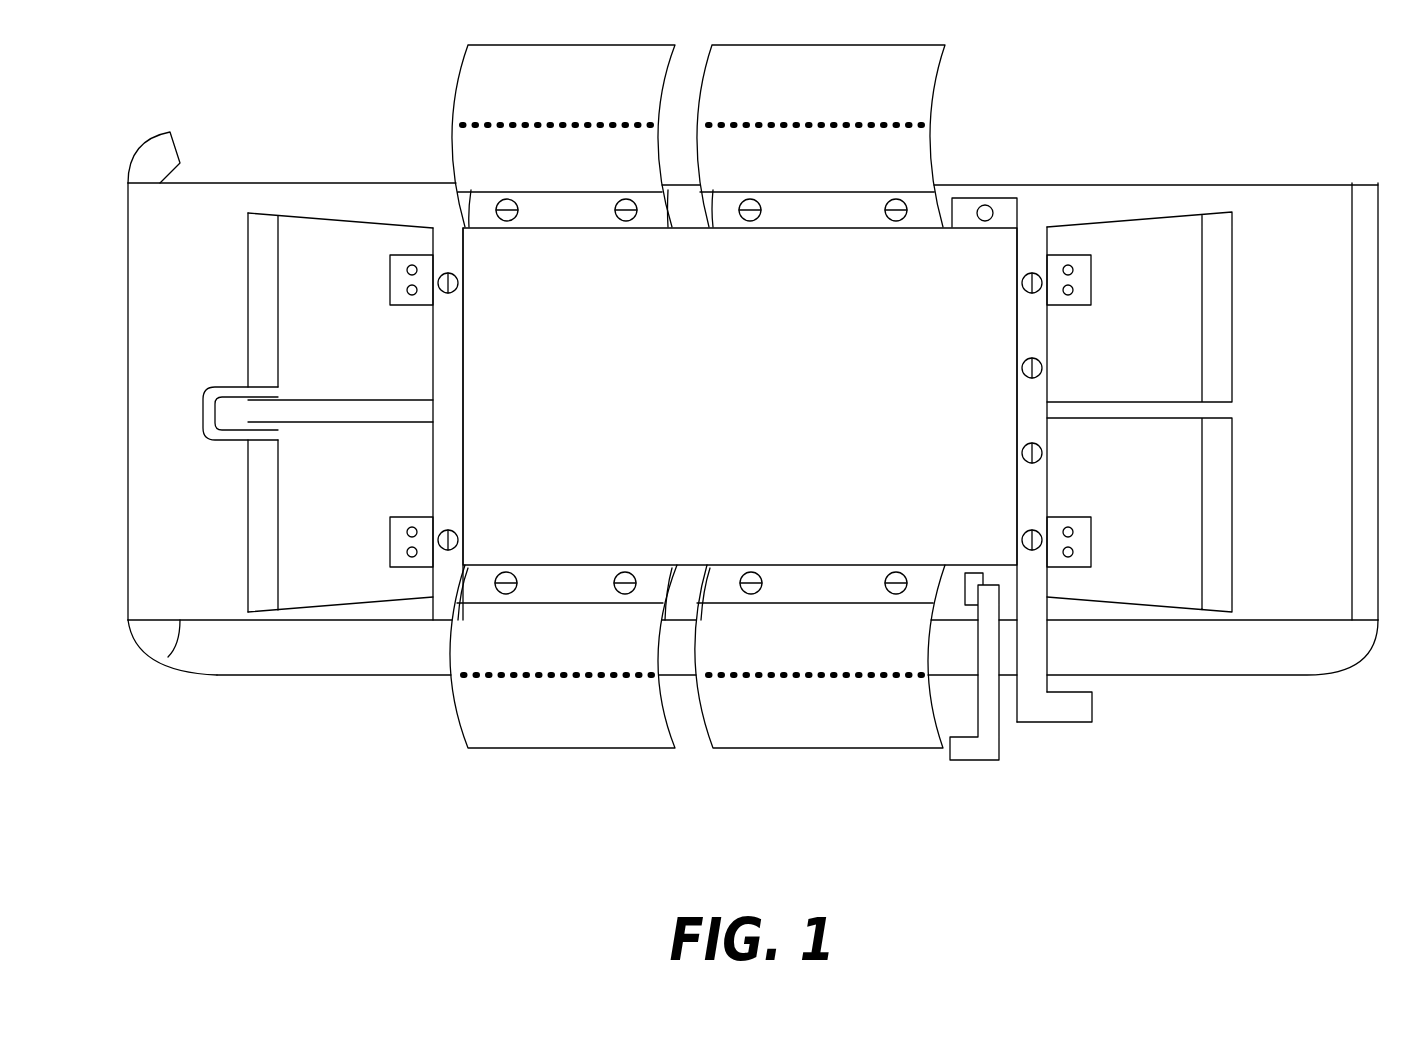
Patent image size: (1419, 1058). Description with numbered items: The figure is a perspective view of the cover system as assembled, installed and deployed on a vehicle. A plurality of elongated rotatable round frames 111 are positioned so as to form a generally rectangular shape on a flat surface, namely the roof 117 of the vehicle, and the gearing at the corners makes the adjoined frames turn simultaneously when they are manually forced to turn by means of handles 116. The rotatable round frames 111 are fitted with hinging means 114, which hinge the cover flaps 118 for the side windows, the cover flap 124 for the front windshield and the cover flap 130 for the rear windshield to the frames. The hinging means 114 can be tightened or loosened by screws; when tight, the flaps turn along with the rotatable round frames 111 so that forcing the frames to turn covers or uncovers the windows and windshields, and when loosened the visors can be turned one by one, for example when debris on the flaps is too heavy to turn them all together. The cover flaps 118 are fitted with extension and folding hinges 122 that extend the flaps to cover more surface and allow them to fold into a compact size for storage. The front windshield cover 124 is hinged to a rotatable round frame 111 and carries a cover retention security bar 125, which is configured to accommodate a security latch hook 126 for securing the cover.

The elongated rotatable round frames 111 is at (1040, 332).
The hinging means 114 is at (1043, 555).
The handles 116 is at (1057, 713).
The roof 117 is at (593, 507).
The cover flaps 118 is at (813, 712).
The extension and folding hinges 122 is at (467, 157).
The cover flap for front windshield 124 is at (362, 235).
The cover retention security bar 125 is at (265, 217).
The security latch hook 126 is at (230, 440).
The cover flap for rear windshield 130 is at (1182, 237).